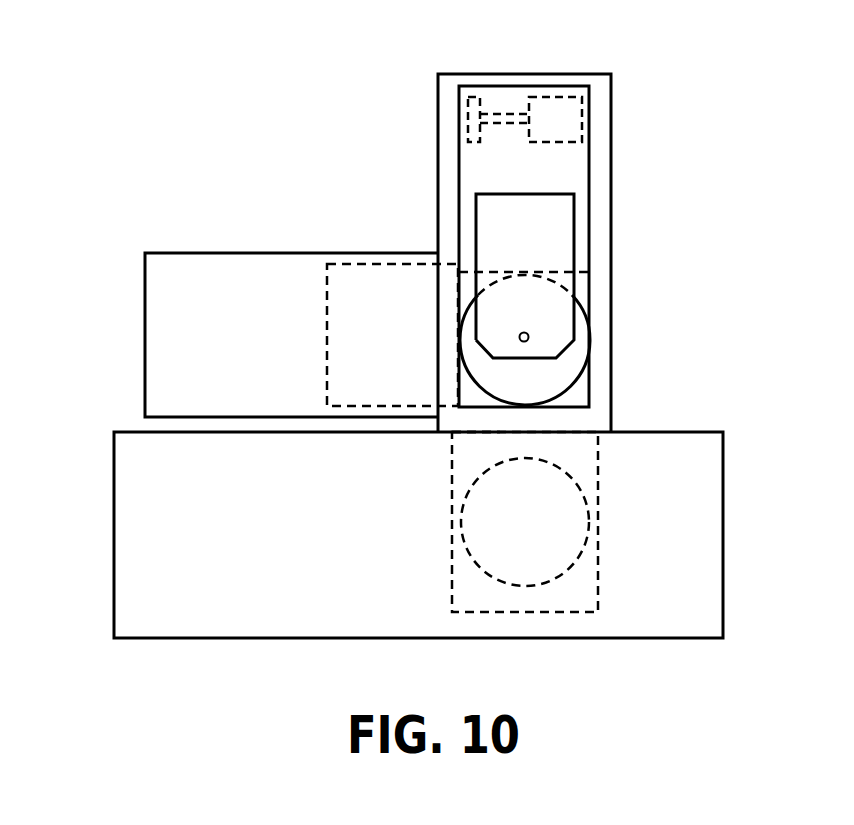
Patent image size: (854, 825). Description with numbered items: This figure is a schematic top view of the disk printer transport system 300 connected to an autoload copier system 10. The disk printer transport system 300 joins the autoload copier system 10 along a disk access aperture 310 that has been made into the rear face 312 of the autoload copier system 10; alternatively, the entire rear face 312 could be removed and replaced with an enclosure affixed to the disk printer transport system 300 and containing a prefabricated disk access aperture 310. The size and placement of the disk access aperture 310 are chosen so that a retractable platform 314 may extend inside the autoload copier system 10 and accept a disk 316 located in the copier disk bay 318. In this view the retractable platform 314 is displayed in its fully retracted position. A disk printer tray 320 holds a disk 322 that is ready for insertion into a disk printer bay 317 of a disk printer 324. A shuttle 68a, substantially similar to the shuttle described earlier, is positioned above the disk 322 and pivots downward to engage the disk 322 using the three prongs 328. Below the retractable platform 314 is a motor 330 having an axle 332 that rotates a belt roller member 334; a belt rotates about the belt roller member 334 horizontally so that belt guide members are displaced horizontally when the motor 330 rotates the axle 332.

The autoload copier system 10 is at (100, 467).
The disk printer transport system 300 is at (460, 66).
The disk access aperture 310 is at (507, 432).
The rear face 312 is at (673, 431).
The retractable platform 314 is at (591, 186).
The disk 316 is at (583, 494).
The disk printer bay 317 is at (372, 265).
The copier disk bay 318 is at (598, 570).
The disk printer tray 320 is at (591, 304).
The disk 322 is at (581, 389).
The disk printer 324 is at (291, 335).
The three prongs 328 is at (519, 337).
The motor 330 is at (587, 133).
The axle 332 is at (500, 114).
The belt roller member 334 is at (467, 138).
The shuttle 68a is at (575, 251).